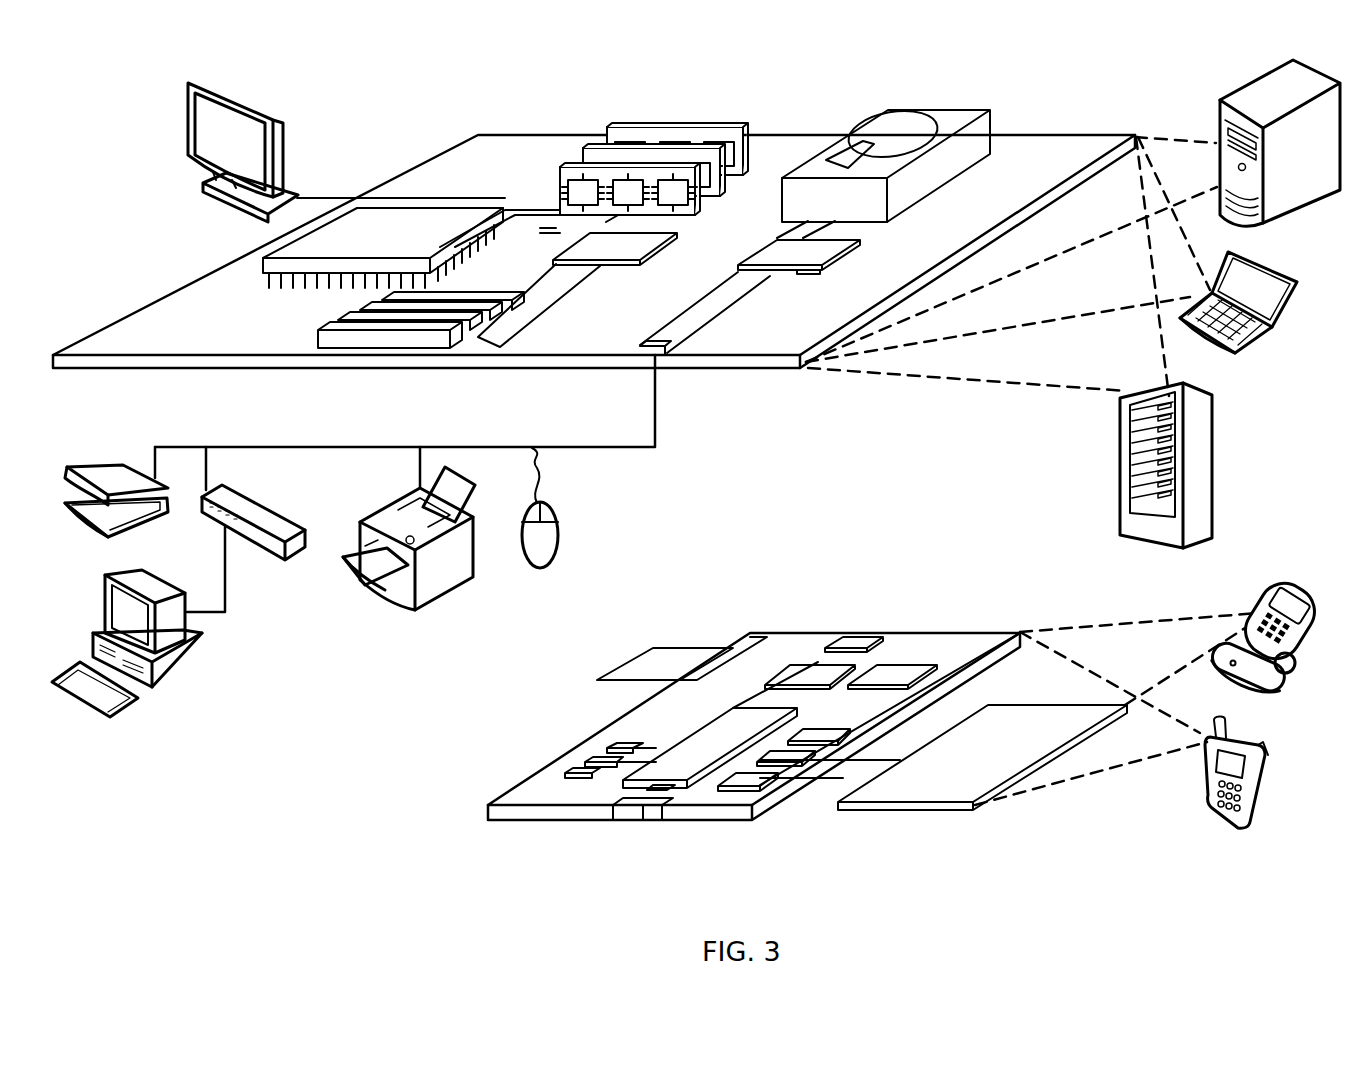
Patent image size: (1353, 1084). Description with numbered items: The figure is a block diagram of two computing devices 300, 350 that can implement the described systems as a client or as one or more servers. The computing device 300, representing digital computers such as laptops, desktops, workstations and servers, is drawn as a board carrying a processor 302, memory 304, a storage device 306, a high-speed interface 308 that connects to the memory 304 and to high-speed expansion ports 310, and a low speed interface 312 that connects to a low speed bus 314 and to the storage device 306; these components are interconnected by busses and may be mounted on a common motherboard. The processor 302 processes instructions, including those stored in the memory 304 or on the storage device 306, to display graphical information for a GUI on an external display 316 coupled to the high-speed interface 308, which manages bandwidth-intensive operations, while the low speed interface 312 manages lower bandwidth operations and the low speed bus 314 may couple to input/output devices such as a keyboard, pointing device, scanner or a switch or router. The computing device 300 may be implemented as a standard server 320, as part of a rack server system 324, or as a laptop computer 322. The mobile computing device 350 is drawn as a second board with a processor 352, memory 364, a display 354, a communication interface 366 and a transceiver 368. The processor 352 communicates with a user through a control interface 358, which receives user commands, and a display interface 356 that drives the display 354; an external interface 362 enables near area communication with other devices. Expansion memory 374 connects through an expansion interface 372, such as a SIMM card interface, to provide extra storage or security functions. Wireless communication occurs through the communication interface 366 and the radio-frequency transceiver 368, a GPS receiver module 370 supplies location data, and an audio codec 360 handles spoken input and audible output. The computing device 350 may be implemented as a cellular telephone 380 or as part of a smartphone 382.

The computing device 300 is at (402, 108).
The processor 302 is at (265, 265).
The memory 304 is at (628, 128).
The storage device 306 is at (879, 112).
The high-speed interface 308 is at (597, 243).
The high-speed expansion ports 310 is at (348, 326).
The low speed interface 312 is at (777, 252).
The low speed bus 314 is at (666, 357).
The display 316 is at (188, 82).
The standard server 320 is at (1218, 121).
The laptop computer 322 is at (1287, 290).
The rack server system 324 is at (1120, 482).
The computing device 350 is at (460, 820).
The processor 352 is at (680, 773).
The display 354 is at (937, 790).
The display interface 356 is at (752, 778).
The control interface 358 is at (790, 757).
The audio codec 360 is at (820, 735).
The external interface 362 is at (643, 810).
The memory 364 is at (583, 765).
The communication interface 366 is at (810, 672).
The transceiver 368 is at (892, 672).
The GPS receiver module 370 is at (862, 638).
The expansion interface 372 is at (730, 648).
The expansion memory 374 is at (660, 648).
The cellular telephone 380 is at (1277, 593).
The smartphone 382 is at (1208, 775).